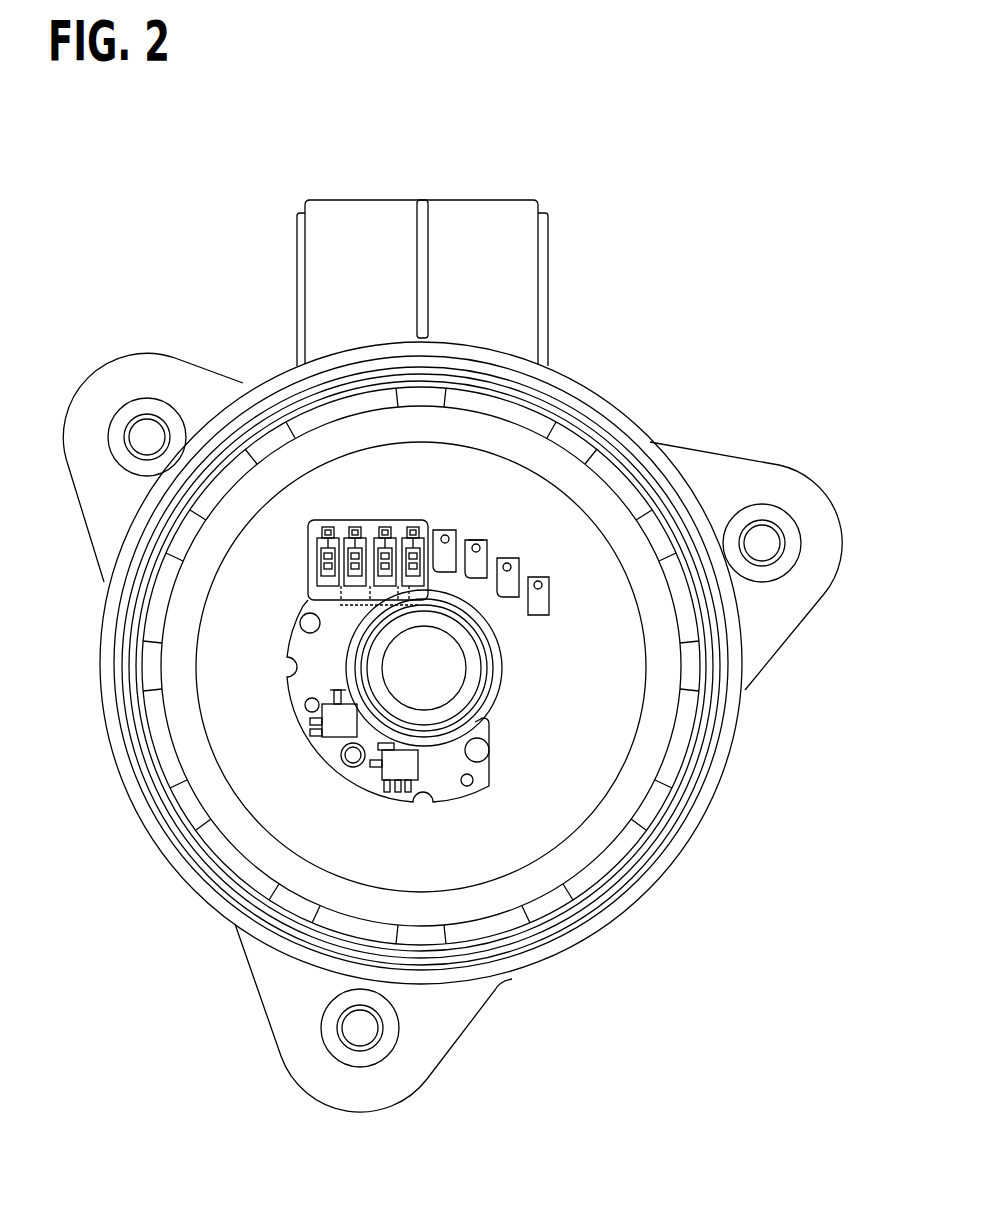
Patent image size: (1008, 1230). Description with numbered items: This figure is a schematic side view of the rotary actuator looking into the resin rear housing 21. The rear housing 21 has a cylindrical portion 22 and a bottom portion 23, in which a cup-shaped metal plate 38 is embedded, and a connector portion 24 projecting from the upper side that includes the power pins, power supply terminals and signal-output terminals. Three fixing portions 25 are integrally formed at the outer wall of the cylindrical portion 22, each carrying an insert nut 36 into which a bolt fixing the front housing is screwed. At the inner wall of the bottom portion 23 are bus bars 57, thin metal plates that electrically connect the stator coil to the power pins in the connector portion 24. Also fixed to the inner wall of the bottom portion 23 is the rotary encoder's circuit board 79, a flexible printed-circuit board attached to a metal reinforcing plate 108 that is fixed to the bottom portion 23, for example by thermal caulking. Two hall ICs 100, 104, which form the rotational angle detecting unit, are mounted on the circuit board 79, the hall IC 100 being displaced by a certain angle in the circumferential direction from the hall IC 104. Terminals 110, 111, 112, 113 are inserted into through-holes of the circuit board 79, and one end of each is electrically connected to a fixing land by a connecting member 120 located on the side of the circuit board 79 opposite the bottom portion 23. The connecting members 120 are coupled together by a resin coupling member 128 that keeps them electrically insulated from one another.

The rear housing 21 is at (618, 404).
The cylindrical portion 22 is at (665, 868).
The bottom portion 23 is at (517, 823).
The connector portion 24 is at (525, 268).
The fixing portions 25 is at (90, 390).
The insert nut 36 is at (117, 452).
The metal plate 38 is at (483, 695).
The bus bars 57 is at (445, 535).
The circuit board 79 is at (315, 673).
The hall IC 100 is at (327, 718).
The hall IC 104 is at (383, 776).
The metal reinforcing plate 108 is at (298, 626).
The terminal 110 is at (307, 562).
The terminal 111 is at (368, 524).
The terminal 112 is at (397, 524).
The terminal 113 is at (472, 540).
The connecting members 120 is at (385, 524).
The coupling member 128 is at (318, 544).